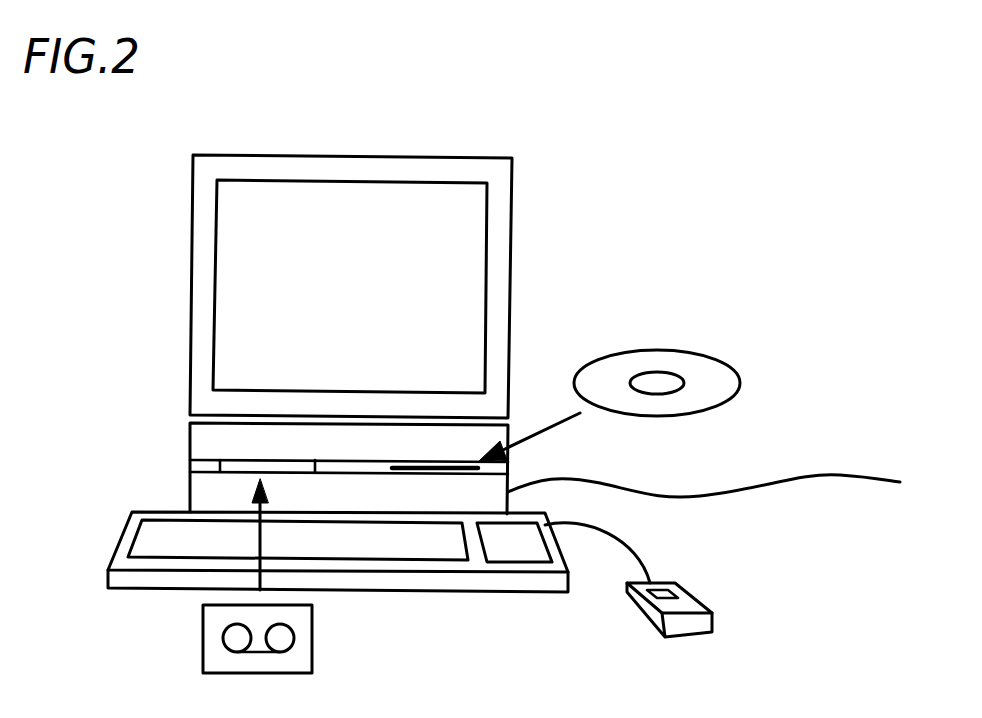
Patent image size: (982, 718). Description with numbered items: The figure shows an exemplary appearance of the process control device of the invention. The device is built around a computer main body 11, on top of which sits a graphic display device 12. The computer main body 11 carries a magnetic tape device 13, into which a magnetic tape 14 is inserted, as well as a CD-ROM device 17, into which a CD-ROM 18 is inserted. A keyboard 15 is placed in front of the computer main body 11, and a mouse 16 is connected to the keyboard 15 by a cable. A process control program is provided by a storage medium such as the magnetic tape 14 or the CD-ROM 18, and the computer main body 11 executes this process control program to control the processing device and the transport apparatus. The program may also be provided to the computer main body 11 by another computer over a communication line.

The computer main body 11 is at (188, 440).
The graphic display device 12 is at (192, 267).
The magnetic tape device 13 is at (230, 471).
The magnetic tape 14 is at (203, 637).
The keyboard 15 is at (455, 592).
The mouse 16 is at (713, 617).
The CD-ROM device 17 is at (420, 470).
The CD-ROM 18 is at (723, 380).